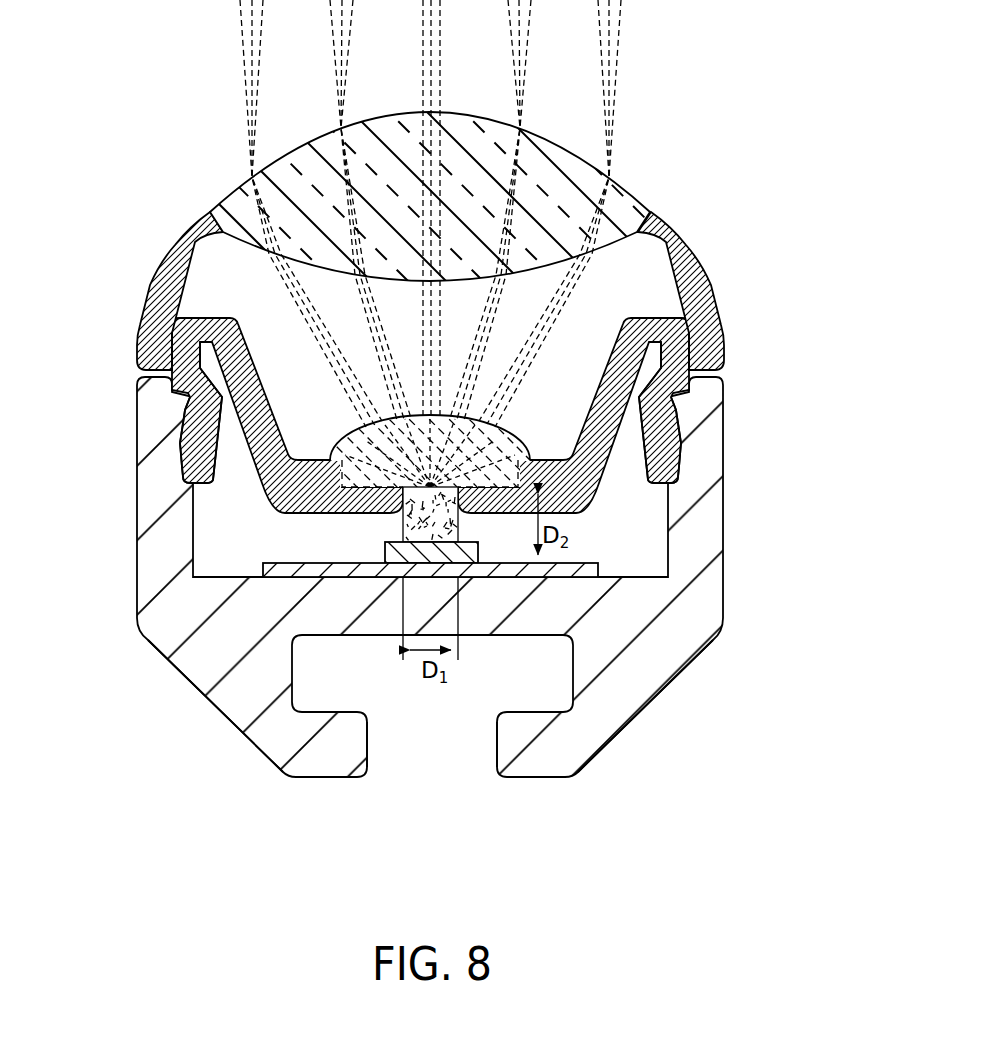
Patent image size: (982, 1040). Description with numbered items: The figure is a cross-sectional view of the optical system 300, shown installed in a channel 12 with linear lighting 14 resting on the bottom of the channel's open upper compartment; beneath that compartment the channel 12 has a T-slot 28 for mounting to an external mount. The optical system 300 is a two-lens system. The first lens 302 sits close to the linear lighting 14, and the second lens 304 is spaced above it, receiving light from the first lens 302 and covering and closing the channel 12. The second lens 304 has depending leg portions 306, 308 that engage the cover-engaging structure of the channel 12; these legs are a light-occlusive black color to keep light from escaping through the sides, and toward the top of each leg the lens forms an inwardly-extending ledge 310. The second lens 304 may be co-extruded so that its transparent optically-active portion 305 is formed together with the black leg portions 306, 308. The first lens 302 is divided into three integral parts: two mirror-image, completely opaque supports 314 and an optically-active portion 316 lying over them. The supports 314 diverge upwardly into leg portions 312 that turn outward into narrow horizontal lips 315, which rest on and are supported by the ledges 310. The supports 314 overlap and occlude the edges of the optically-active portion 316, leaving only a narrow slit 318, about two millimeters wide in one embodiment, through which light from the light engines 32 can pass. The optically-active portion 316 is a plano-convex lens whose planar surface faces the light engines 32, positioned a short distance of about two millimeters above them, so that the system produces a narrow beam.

The channel 12 is at (133, 567).
The linear lighting 14 is at (280, 554).
The T-slot 28 is at (440, 735).
The light engines 32 is at (465, 560).
The optical system 300 is at (239, 175).
The first lens 302 is at (544, 456).
The second lens 304 is at (477, 160).
The optically-active portion 305 is at (383, 128).
The leg portion 306 is at (190, 466).
The leg portion 308 is at (680, 464).
The ledge 310 is at (176, 352).
The leg portions 312 is at (172, 396).
The supports 314 is at (328, 522).
The lips 315 is at (205, 316).
The optically-active portion 316 is at (384, 418).
The slit 318 is at (352, 565).